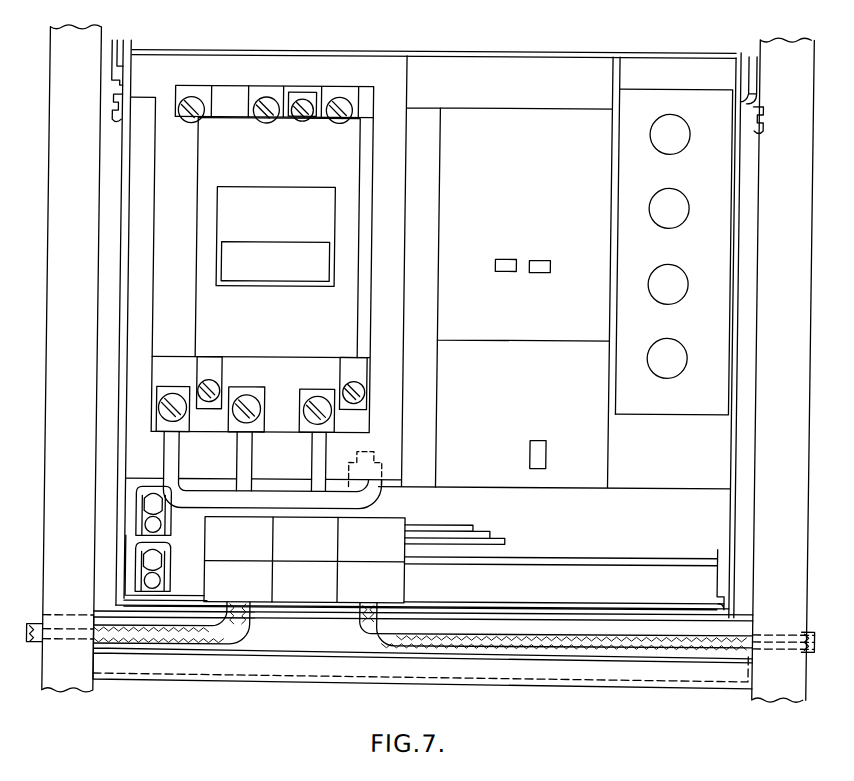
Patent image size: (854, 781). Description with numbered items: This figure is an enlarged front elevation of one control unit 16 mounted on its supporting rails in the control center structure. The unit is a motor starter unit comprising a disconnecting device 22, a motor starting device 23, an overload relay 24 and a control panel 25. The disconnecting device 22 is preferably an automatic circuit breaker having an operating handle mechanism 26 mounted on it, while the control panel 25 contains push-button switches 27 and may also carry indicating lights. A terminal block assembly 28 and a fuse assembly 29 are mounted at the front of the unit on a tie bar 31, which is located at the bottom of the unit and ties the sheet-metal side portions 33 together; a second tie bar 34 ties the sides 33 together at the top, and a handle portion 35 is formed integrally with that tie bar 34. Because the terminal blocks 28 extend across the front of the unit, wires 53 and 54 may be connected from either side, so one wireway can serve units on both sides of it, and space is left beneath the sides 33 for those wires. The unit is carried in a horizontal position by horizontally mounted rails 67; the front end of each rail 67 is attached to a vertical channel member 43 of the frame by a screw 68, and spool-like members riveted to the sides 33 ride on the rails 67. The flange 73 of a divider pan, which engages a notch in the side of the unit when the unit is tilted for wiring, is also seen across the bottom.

The control unit 16 is at (394, 40).
The disconnecting device 22 is at (285, 161).
The motor starting device 23 is at (533, 203).
The overload relay 24 is at (533, 404).
The control panel 25 is at (719, 125).
The operating handle mechanism 26 is at (277, 258).
The push-button switches 27 is at (665, 196).
The terminal block assembly 28 is at (317, 551).
The fuse assembly 29 is at (198, 548).
The tie bar 31 is at (637, 562).
The side portions 33 is at (122, 303).
The tie bar 34 is at (272, 50).
The handle portion 35 is at (515, 75).
The vertical channel members 43 is at (46, 401).
The wires 53 is at (246, 634).
The wires 54 is at (360, 634).
The rails 67 is at (110, 81).
The screw 68 is at (104, 123).
The flange 73 is at (606, 678).